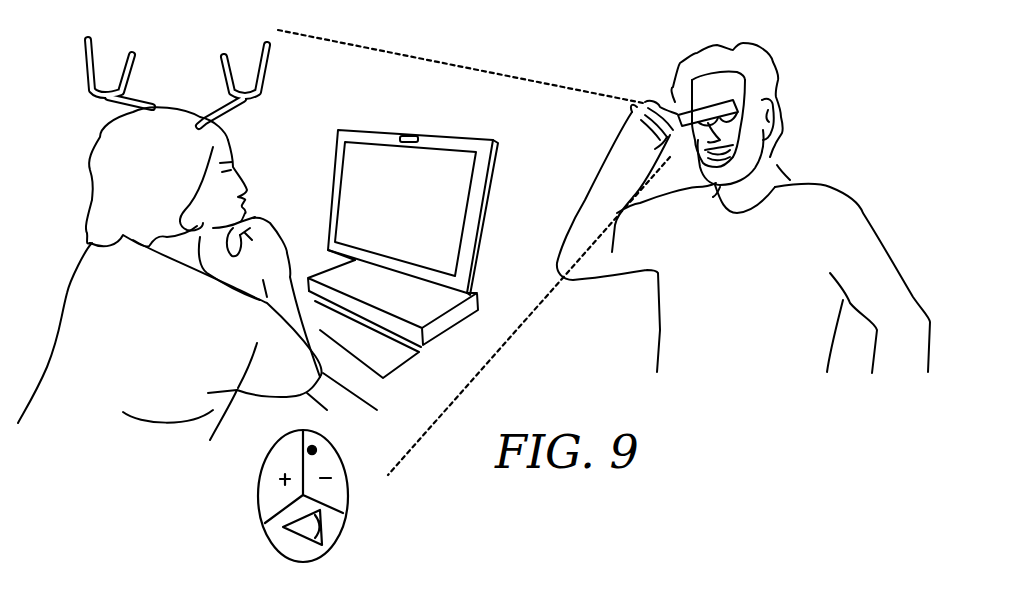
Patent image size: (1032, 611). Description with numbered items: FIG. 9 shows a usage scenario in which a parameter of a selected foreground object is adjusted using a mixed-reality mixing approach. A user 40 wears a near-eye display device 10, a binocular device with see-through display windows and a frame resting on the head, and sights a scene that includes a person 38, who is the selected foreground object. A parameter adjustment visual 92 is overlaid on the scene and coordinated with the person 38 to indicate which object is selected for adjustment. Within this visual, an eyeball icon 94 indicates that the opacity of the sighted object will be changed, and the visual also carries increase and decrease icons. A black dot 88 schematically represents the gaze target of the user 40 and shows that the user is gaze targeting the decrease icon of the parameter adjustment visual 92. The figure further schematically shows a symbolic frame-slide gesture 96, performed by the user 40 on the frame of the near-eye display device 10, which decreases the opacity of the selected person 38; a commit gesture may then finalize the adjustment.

The near-eye display device 10 is at (733, 91).
The person 38 is at (36, 302).
The user 40 is at (740, 208).
The black dot 88 is at (347, 433).
The parameter adjustment visual 92 is at (239, 493).
The eyeball icon 94 is at (329, 528).
The frame-slide gesture 96 is at (606, 108).